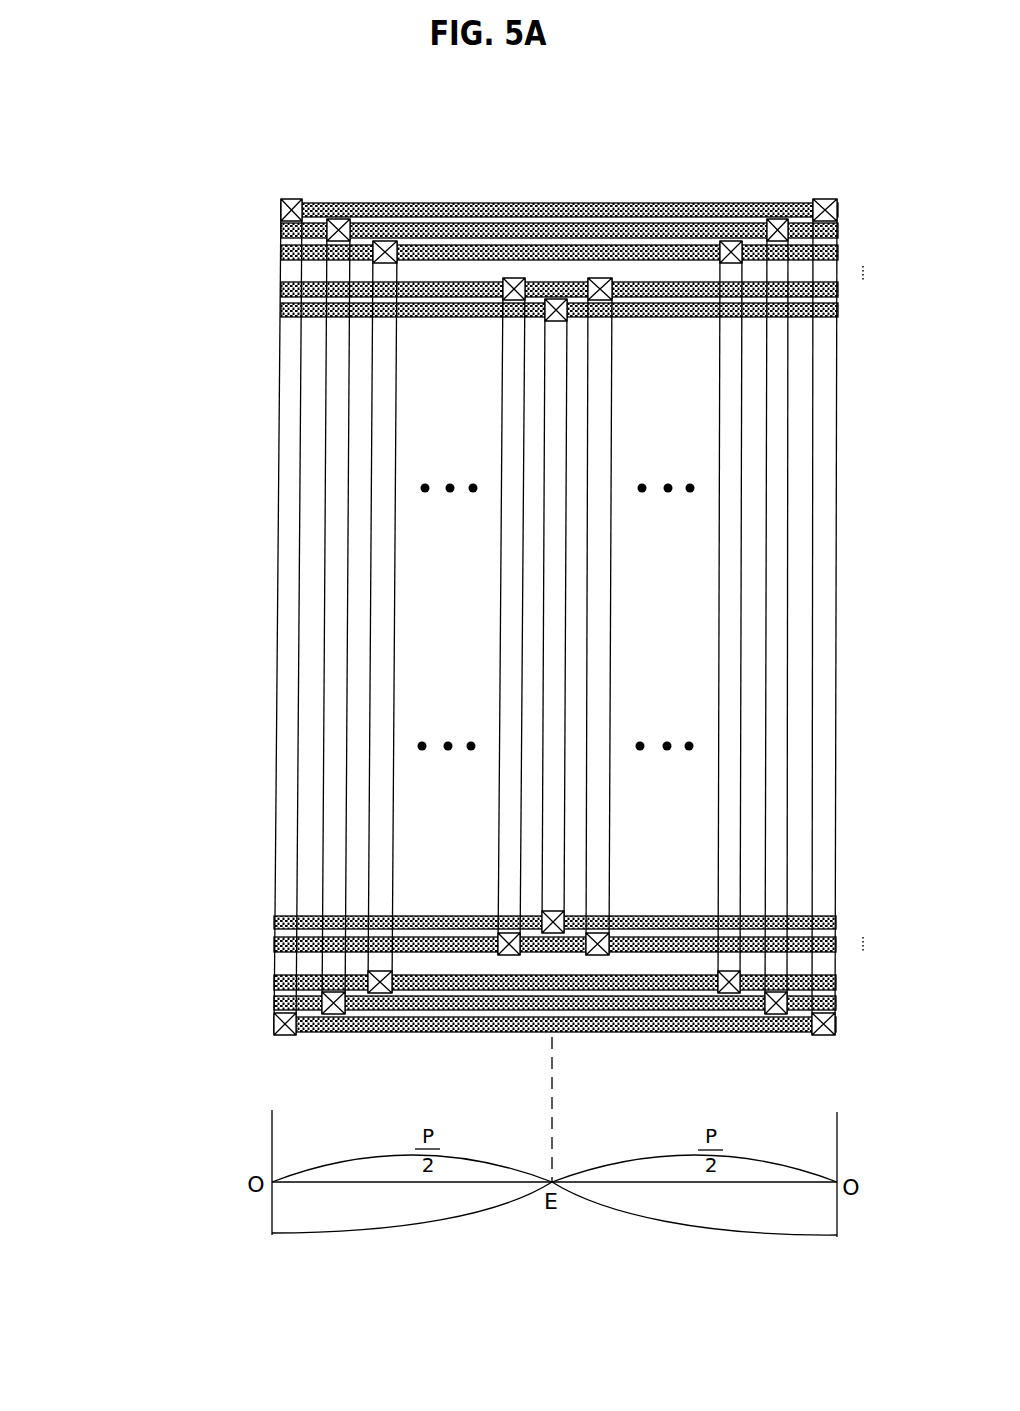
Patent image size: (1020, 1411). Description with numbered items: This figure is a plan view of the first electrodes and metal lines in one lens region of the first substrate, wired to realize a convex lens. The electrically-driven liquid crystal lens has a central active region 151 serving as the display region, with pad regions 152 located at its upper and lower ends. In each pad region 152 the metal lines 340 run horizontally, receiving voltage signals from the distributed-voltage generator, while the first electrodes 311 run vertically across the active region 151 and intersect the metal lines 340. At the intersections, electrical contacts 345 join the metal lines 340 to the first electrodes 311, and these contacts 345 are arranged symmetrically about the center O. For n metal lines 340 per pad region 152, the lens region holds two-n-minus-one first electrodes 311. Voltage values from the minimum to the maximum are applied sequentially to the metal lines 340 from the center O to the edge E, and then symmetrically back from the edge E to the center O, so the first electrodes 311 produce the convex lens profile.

The metal lines 340 is at (720, 203).
The electrical contacts 345 is at (293, 199).
The first electrodes 311 is at (297, 548).
The active region 151 is at (255, 916).
The pad regions 152 is at (257, 1035).